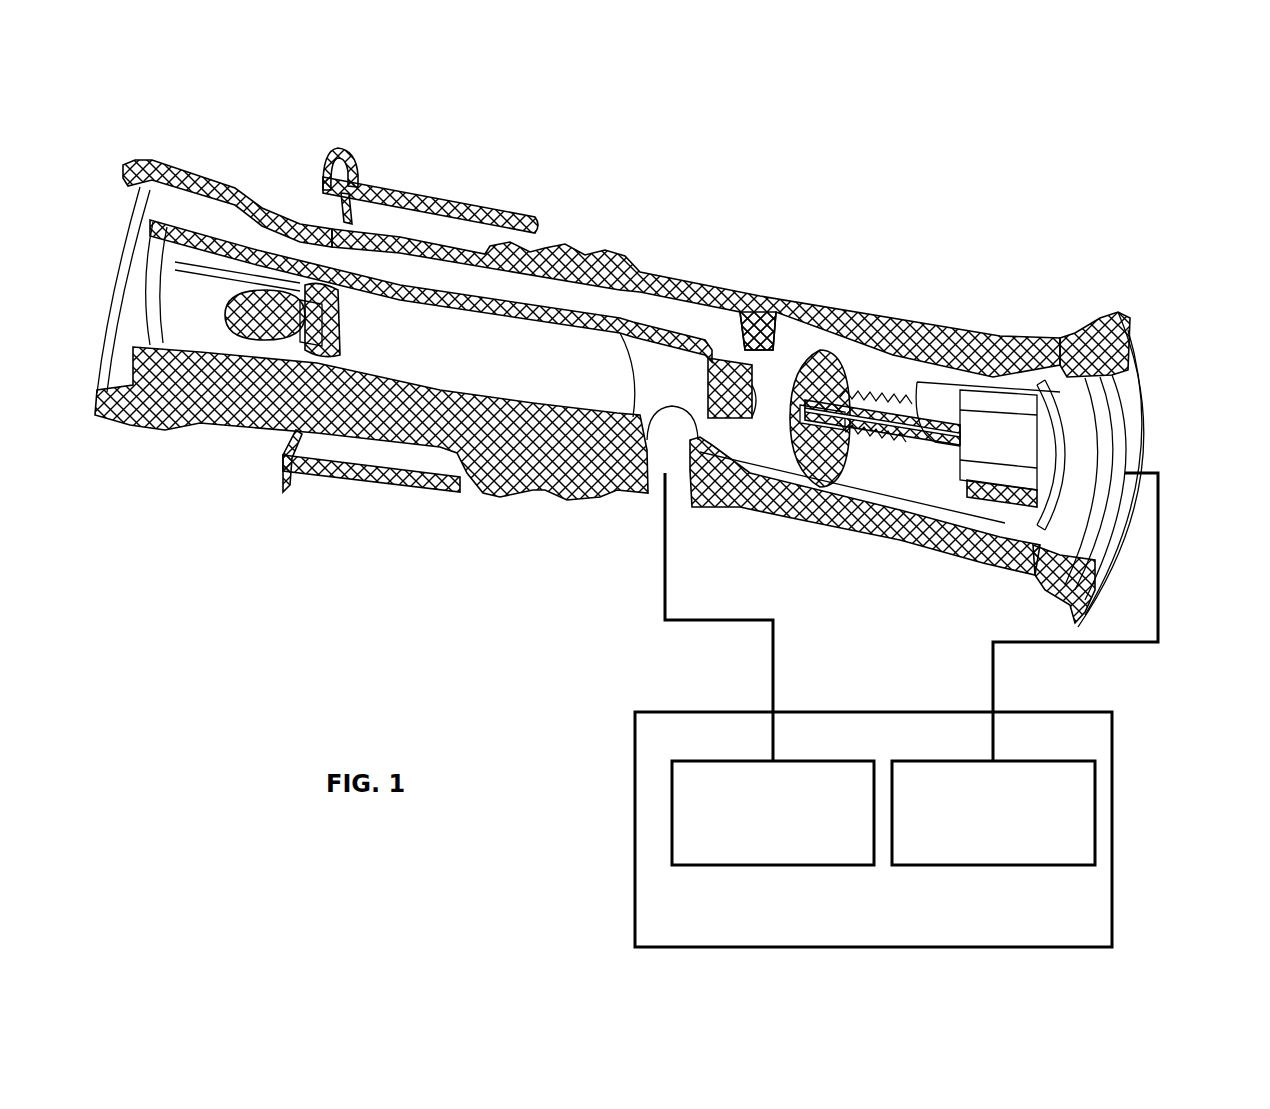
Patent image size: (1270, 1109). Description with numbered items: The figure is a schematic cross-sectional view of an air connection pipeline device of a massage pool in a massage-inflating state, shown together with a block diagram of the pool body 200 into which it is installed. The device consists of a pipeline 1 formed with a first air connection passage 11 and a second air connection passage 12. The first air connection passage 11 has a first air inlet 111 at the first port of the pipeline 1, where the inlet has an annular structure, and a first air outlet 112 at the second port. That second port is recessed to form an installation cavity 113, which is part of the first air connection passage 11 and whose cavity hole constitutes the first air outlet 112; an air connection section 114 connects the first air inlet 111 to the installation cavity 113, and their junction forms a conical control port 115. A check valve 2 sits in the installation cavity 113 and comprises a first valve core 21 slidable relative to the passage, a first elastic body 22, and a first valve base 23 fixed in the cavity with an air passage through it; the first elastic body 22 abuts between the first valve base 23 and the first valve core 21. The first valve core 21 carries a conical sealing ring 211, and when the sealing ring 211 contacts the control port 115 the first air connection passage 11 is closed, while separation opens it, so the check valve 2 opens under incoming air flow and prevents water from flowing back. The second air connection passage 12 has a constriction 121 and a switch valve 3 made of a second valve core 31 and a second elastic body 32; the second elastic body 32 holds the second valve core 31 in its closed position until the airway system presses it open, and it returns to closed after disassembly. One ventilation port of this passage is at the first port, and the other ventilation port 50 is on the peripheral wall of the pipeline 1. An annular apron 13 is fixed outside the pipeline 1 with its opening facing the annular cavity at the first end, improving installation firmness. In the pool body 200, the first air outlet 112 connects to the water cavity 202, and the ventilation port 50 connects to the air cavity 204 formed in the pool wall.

The pipeline 1 is at (670, 353).
The check valve 2 is at (990, 395).
The switch valve 3 is at (196, 386).
The first air connection passage 11 is at (583, 310).
The second air connection passage 12 is at (533, 373).
The annular apron 13 is at (390, 183).
The first valve core 21 is at (907, 392).
The first elastic body 22 is at (893, 455).
The first valve base 23 is at (1013, 493).
The second valve core 31 is at (311, 300).
The second elastic body 32 is at (247, 413).
The ventilation port 50 is at (652, 450).
The first air inlet 111 is at (207, 220).
The first air outlet 112 is at (1125, 407).
The installation cavity 113 is at (880, 488).
The air connection section 114 is at (413, 277).
The control port 115 is at (777, 367).
The constriction 121 is at (283, 290).
The sealing ring 211 is at (787, 483).
The pool body 200 is at (873, 829).
The water cavity 202 is at (993, 813).
The air cavity 204 is at (773, 813).